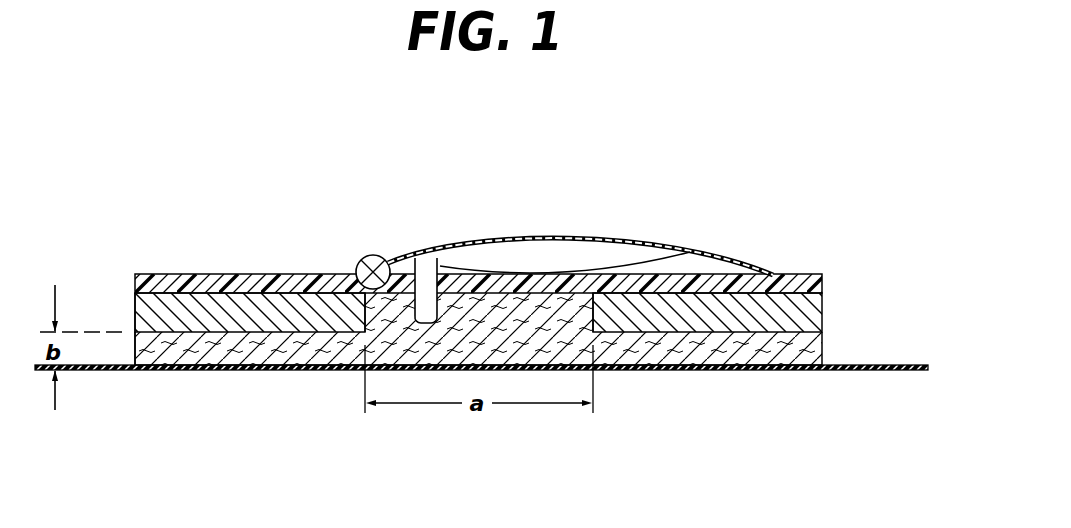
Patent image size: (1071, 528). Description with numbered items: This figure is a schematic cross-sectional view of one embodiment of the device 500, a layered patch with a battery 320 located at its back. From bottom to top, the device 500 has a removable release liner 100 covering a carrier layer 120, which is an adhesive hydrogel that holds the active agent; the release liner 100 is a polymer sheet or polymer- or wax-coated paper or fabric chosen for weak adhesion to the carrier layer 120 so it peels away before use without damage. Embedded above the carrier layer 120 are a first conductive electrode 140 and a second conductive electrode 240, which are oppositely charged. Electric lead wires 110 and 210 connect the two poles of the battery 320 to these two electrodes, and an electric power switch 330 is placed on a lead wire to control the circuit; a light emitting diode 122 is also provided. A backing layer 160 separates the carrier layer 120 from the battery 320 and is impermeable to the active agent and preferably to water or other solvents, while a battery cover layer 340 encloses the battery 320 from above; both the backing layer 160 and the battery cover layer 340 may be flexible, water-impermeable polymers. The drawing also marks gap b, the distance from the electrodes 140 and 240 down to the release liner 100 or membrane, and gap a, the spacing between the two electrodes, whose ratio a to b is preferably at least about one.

The removable release liner 100 is at (683, 368).
The electric lead wire 110 is at (697, 310).
The carrier layer 120 is at (822, 348).
The light emitting diode 122 is at (438, 284).
The first conductive electrode 140 is at (822, 312).
The backing layer 160 is at (822, 283).
The electric lead wire 210 is at (347, 307).
The second conductive electrode 240 is at (135, 315).
The battery 320 is at (563, 248).
The electric power switch 330 is at (362, 258).
The battery cover layer 340 is at (717, 255).
The device 500 is at (356, 138).